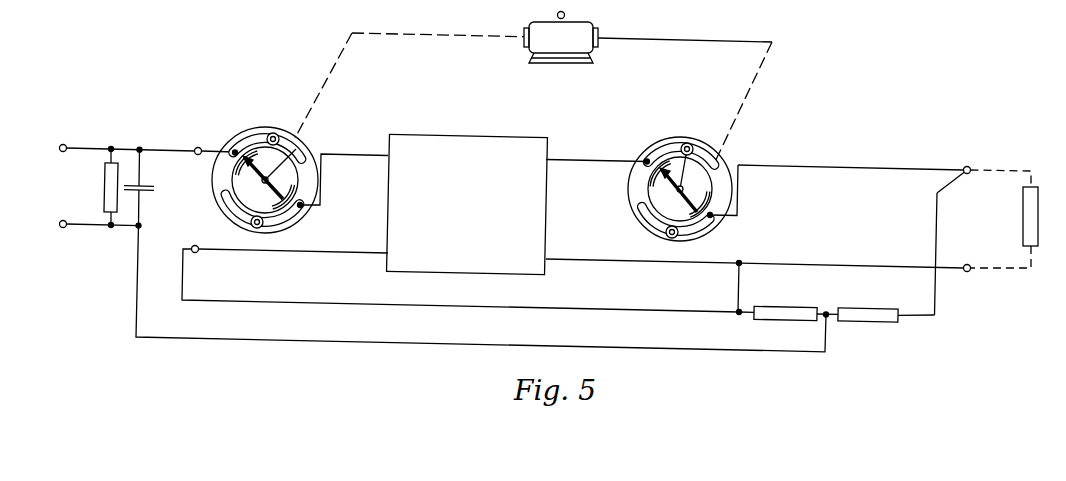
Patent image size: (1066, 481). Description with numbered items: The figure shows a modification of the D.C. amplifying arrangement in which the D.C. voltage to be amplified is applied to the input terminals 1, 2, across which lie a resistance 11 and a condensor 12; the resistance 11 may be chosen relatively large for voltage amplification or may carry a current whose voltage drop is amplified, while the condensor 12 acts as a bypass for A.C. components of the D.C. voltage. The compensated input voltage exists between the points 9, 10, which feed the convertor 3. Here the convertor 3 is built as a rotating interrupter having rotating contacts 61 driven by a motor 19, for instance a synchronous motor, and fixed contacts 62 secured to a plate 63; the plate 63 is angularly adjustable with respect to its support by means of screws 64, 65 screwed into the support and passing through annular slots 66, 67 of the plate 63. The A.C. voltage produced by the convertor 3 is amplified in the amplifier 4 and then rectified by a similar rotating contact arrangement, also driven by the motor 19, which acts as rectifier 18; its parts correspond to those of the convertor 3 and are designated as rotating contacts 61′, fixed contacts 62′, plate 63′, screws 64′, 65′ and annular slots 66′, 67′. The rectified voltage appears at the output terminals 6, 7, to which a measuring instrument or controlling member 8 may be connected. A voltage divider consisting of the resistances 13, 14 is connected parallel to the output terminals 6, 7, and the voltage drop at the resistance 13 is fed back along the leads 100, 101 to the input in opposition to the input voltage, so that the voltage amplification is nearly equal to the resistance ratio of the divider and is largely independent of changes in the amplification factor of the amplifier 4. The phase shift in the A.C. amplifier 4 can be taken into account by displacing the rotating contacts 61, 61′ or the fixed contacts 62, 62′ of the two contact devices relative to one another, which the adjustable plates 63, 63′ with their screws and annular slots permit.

The input terminal 1 is at (64, 137).
The input terminal 2 is at (58, 238).
The convertor 3 is at (265, 162).
The amplifier 4 is at (467, 204).
The output terminal 6 is at (968, 159).
The output terminal 7 is at (963, 281).
The measuring instrument or controlling member 8 is at (1005, 219).
The convertor input terminal 9 is at (198, 140).
The convertor input terminal 10 is at (195, 238).
The resistance 11 is at (96, 187).
The condensor 12 is at (145, 188).
The resistance of voltage divider 13 is at (796, 303).
The resistance of voltage divider 14 is at (868, 304).
The rectifier 18 is at (675, 147).
The motor 19 is at (561, 52).
The rotating contacts 61 is at (297, 156).
The fixed contacts 62 is at (241, 186).
The plate 63 is at (303, 208).
The screw 64 is at (276, 134).
The screw 65 is at (258, 229).
The annular slot 66 is at (246, 138).
The annular slot 67 is at (244, 224).
The rotating contacts 61′ is at (702, 176).
The fixed contacts 62′ is at (652, 186).
The plate 63′ is at (713, 222).
The screw 64′ is at (690, 143).
The screw 65′ is at (672, 240).
The annular slot 66′ is at (662, 143).
The annular slot 67′ is at (653, 223).
The lead 100 is at (468, 282).
The lead 101 is at (482, 289).